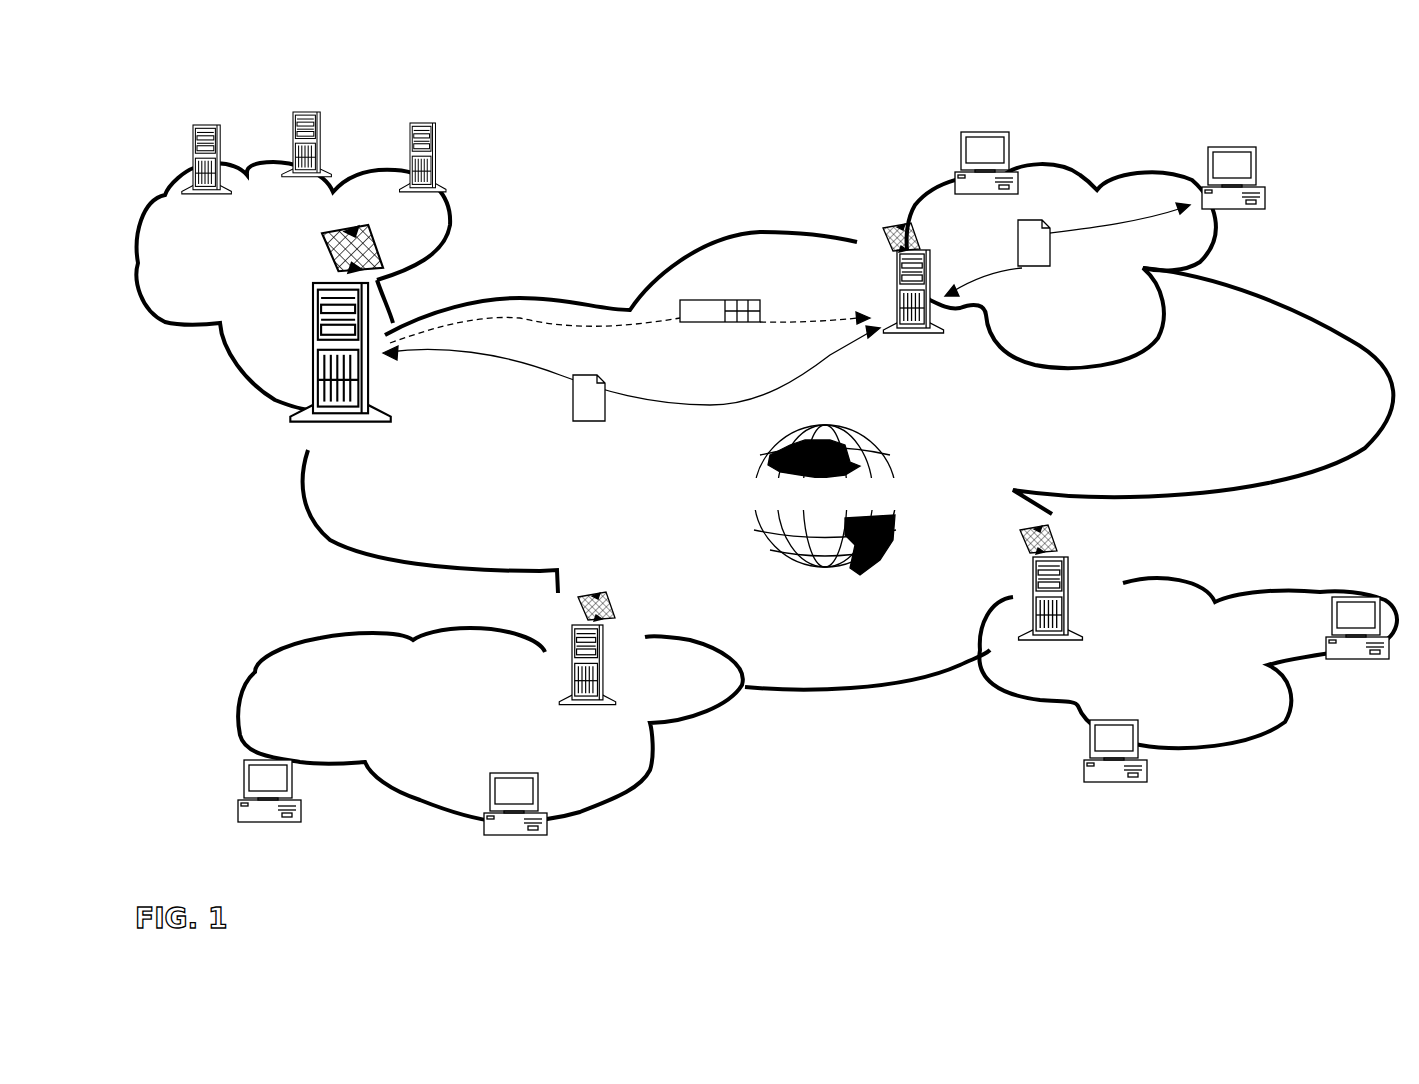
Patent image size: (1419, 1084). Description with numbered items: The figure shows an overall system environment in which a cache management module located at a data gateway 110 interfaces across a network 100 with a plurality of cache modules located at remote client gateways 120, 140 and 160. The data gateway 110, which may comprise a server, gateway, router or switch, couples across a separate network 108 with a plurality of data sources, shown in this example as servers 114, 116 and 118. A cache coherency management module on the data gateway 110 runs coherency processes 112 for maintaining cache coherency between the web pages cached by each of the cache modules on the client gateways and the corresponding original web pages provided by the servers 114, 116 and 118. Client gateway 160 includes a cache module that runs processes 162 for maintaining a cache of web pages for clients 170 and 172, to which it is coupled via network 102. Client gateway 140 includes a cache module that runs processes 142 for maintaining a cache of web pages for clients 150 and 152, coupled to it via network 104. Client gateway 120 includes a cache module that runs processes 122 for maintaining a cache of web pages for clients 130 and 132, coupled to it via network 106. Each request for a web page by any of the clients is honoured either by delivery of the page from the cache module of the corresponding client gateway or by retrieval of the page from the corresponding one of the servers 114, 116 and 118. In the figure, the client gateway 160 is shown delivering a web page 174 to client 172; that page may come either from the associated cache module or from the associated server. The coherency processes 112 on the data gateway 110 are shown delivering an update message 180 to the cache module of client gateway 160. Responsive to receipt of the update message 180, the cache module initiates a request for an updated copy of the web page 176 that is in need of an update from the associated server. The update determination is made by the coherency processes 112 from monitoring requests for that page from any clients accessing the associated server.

The network 100 is at (561, 298).
The network 102 is at (1097, 188).
The network 104 is at (1240, 590).
The network 106 is at (331, 652).
The network 108 is at (222, 325).
The data gateway 110 is at (313, 286).
The coherency processes 112 is at (366, 233).
The server 114 is at (194, 128).
The server 116 is at (294, 113).
The server 118 is at (410, 126).
The client gateway 120 is at (572, 628).
The processes 122 is at (601, 596).
The client 130 is at (539, 775).
The client 132 is at (280, 758).
The client gateway 140 is at (1068, 560).
The processes 142 is at (1030, 533).
The client 150 is at (1138, 720).
The client 152 is at (1365, 597).
The client gateway 160 is at (930, 254).
The processes 162 is at (900, 228).
The client 170 is at (1009, 132).
The client 172 is at (1257, 152).
The web page 174 is at (1032, 219).
The web page 176 is at (585, 375).
The update message 180 is at (724, 290).